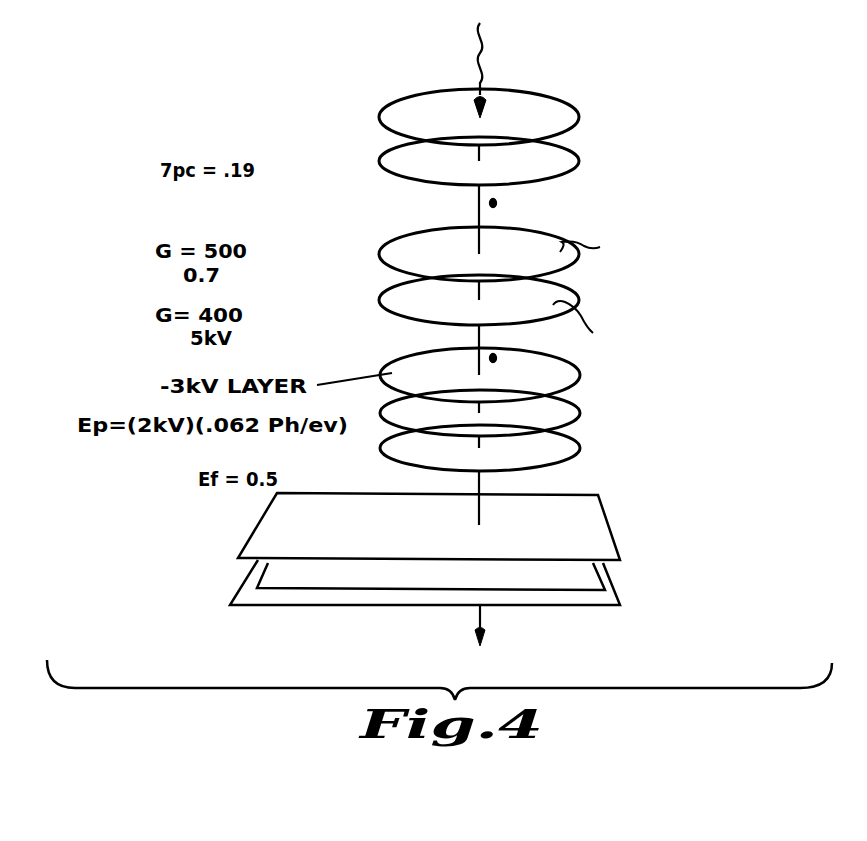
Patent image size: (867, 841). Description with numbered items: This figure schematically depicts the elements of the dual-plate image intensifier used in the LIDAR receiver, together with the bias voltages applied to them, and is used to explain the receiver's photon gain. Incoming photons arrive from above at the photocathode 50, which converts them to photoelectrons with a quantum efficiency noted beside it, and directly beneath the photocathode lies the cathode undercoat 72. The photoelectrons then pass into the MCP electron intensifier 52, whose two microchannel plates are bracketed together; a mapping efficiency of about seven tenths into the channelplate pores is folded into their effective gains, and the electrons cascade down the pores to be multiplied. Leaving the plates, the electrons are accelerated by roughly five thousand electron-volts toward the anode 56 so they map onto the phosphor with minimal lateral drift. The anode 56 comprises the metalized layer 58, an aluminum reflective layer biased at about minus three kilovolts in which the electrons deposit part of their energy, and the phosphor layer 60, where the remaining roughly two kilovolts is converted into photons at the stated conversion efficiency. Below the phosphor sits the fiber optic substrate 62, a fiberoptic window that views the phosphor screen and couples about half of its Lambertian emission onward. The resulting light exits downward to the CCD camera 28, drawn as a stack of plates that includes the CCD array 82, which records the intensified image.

The photocathode 50 is at (565, 113).
The cathode undercoat 72 is at (565, 152).
The MCP electron intensifier 52 is at (703, 209).
The metalized layer 58 is at (568, 370).
The phosphor layer 60 is at (568, 405).
The fiber optic substrate 62 is at (568, 440).
The anode 56 is at (665, 361).
The CCD camera 28 is at (435, 548).
The CCD array 82 is at (274, 581).